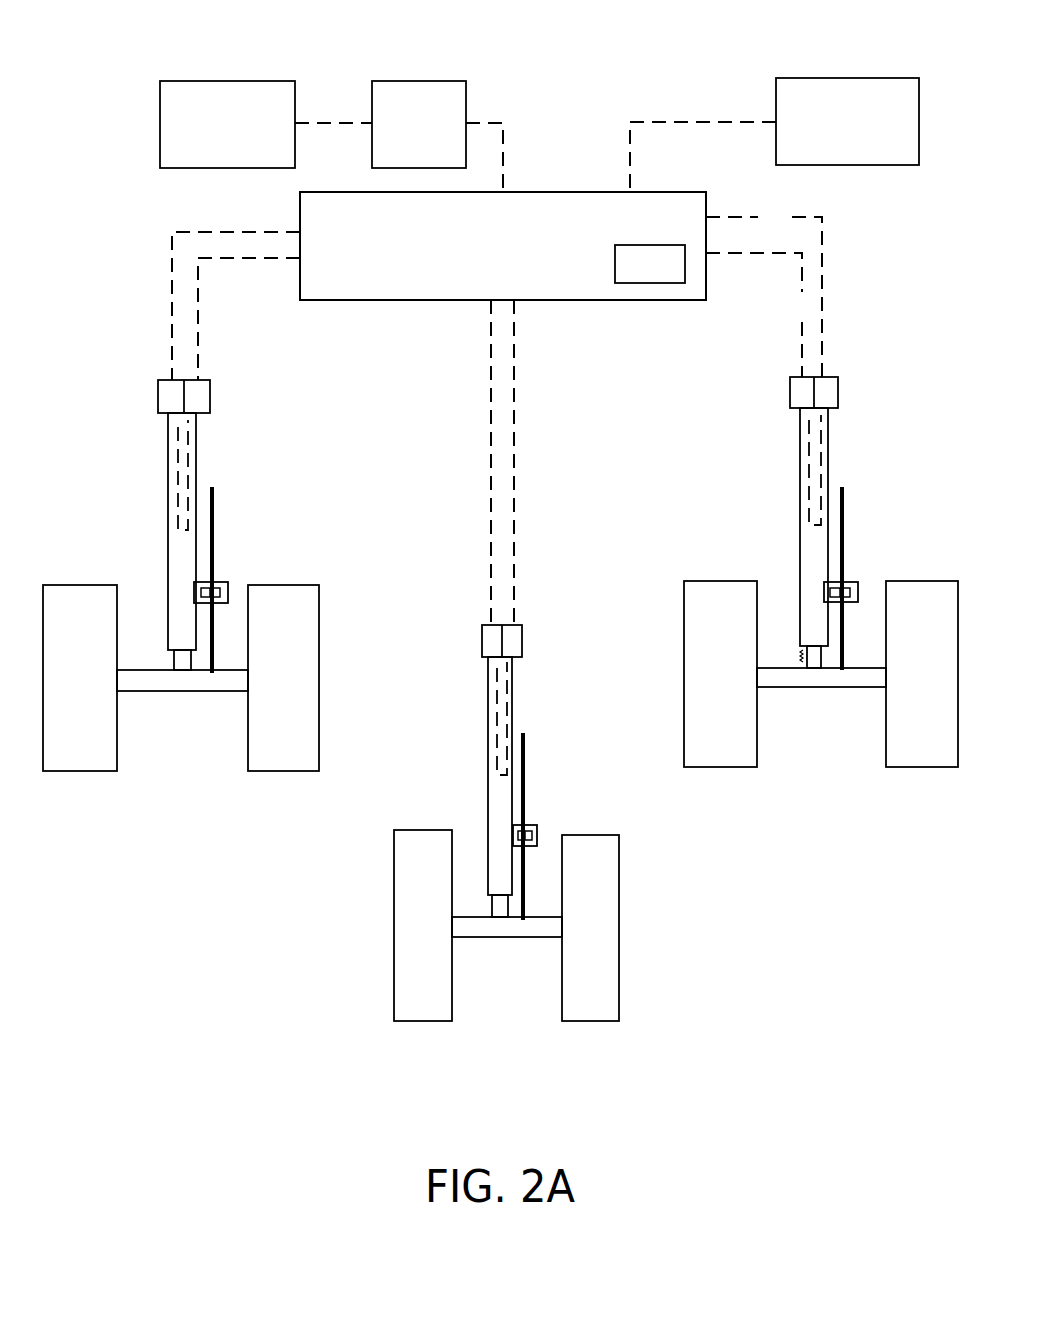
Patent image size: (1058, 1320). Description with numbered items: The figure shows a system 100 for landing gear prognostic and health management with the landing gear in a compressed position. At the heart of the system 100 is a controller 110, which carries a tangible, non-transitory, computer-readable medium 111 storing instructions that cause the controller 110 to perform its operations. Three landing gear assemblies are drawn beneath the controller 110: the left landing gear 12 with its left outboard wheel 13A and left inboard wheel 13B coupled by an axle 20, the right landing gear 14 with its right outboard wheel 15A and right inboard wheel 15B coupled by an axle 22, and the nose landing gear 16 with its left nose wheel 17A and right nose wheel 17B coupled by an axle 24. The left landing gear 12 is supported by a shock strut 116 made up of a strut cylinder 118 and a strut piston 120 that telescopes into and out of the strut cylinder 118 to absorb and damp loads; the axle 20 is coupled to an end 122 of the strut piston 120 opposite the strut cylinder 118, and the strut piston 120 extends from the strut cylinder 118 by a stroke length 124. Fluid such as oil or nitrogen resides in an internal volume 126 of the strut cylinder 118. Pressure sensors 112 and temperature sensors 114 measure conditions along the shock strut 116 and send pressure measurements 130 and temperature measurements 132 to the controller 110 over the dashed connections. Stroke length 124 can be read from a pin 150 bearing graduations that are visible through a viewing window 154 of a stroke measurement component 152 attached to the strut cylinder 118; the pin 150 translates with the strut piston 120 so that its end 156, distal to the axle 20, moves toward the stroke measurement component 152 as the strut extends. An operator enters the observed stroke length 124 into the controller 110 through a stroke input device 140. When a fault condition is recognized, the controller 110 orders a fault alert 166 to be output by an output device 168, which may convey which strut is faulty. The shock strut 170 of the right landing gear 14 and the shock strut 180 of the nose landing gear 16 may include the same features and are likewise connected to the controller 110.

The system 100 is at (128, 78).
The output device 168 is at (212, 159).
The fault alert 166 is at (403, 159).
The stroke input device 140 is at (832, 158).
The controller 110 is at (488, 273).
The tangible, non-transitory, computer-readable medium 111 is at (664, 278).
The temperature measurements 132 is at (764, 289).
The pressure measurements 130 is at (760, 315).
The shock strut 170 is at (120, 413).
The shock strut 180 is at (456, 692).
The shock strut 116 is at (748, 406).
The pressure sensor 112 is at (832, 392).
The temperature sensor 114 is at (800, 387).
The strut cylinder 118 is at (812, 540).
The internal volume 126 is at (806, 472).
The strut piston 120 is at (818, 660).
The end 122 is at (815, 668).
The stroke length 124 is at (800, 655).
The pin 150 is at (845, 522).
The stroke measurement component 152 is at (848, 582).
The viewing window 154 is at (832, 592).
The end 156 is at (849, 476).
The left landing gear 12 is at (823, 724).
The right landing gear 14 is at (184, 738).
The nose landing gear 16 is at (506, 978).
The axle 20 is at (821, 721).
The axle 22 is at (182, 729).
The axle 24 is at (507, 976).
The left outboard wheel 13A is at (907, 694).
The left inboard wheel 13B is at (705, 694).
The right outboard wheel 15A is at (65, 694).
The right inboard wheel 15B is at (268, 694).
The left nose wheel 17A is at (408, 939).
The right nose wheel 17B is at (575, 939).